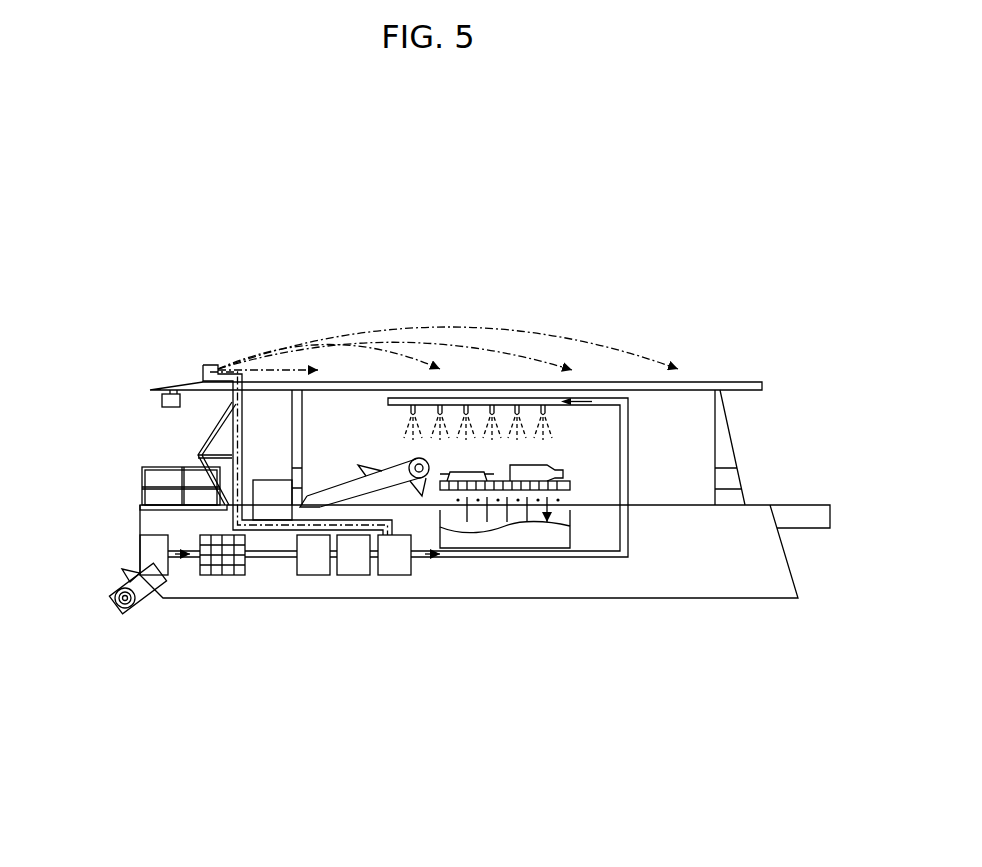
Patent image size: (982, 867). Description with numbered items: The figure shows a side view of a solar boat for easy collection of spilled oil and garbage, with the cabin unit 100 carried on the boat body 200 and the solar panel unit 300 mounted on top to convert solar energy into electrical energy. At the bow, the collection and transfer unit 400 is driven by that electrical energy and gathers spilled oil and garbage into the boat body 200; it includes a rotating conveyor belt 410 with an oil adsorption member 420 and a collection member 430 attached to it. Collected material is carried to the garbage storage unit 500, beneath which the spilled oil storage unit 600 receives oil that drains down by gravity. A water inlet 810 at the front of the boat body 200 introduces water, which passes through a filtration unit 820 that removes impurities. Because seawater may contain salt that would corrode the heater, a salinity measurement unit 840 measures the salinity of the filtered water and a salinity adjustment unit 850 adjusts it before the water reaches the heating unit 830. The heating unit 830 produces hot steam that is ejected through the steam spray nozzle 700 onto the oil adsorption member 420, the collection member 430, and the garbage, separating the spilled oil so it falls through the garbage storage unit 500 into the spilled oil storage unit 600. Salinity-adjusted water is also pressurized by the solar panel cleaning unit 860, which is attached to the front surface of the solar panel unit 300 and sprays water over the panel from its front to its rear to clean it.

The cabin unit 100 is at (343, 438).
The boat body 200 is at (483, 600).
The solar panel unit 300 is at (727, 381).
The collection and transfer unit 400 is at (106, 653).
The conveyor belt 410 is at (147, 592).
The oil adsorption member 420 is at (128, 609).
The collection member 430 is at (123, 578).
The garbage storage unit 500 is at (572, 483).
The spilled oil storage unit 600 is at (543, 537).
The steam spray nozzle 700 is at (410, 410).
The water inlet 810 is at (150, 550).
The filtration unit 820 is at (229, 577).
The heating unit 830 is at (402, 578).
The salinity measurement unit 840 is at (319, 578).
The salinity adjustment unit 850 is at (362, 578).
The solar panel cleaning unit 860 is at (206, 370).